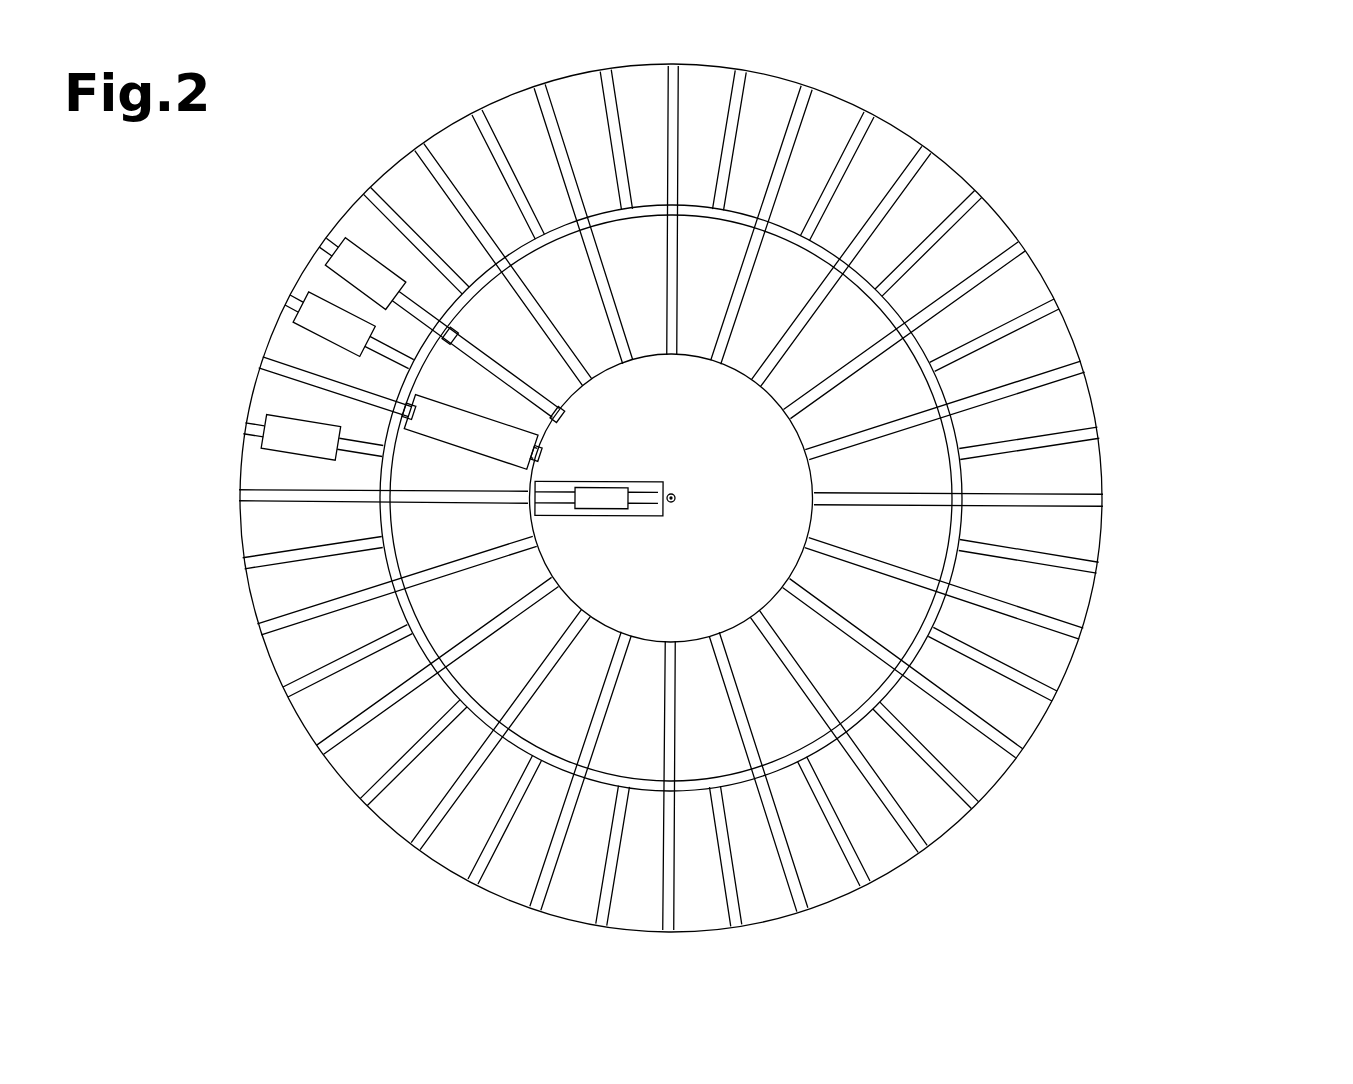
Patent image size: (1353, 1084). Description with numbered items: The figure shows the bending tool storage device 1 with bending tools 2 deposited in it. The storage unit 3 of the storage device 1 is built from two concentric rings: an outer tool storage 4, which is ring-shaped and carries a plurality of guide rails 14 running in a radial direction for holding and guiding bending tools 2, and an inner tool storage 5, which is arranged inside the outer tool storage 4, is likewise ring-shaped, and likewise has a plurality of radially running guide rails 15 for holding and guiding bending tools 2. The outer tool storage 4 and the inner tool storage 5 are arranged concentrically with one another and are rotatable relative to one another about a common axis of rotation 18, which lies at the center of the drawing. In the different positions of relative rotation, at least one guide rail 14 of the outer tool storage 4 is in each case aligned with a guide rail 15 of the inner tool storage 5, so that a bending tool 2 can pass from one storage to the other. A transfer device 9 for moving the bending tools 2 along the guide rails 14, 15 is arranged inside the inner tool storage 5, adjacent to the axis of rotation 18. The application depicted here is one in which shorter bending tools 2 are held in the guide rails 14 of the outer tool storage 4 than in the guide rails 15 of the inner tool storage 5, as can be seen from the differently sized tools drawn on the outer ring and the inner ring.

The bending tool storage device 1 is at (1198, 208).
The bending tools 2 is at (398, 270).
The storage unit 3 is at (1118, 450).
The outer tool storage 4 is at (267, 661).
The inner tool storage 5 is at (727, 377).
The transfer device 9 is at (608, 514).
The guide rails 14 is at (606, 127).
The guide rails 15 is at (450, 331).
The axis of rotation 18 is at (677, 498).